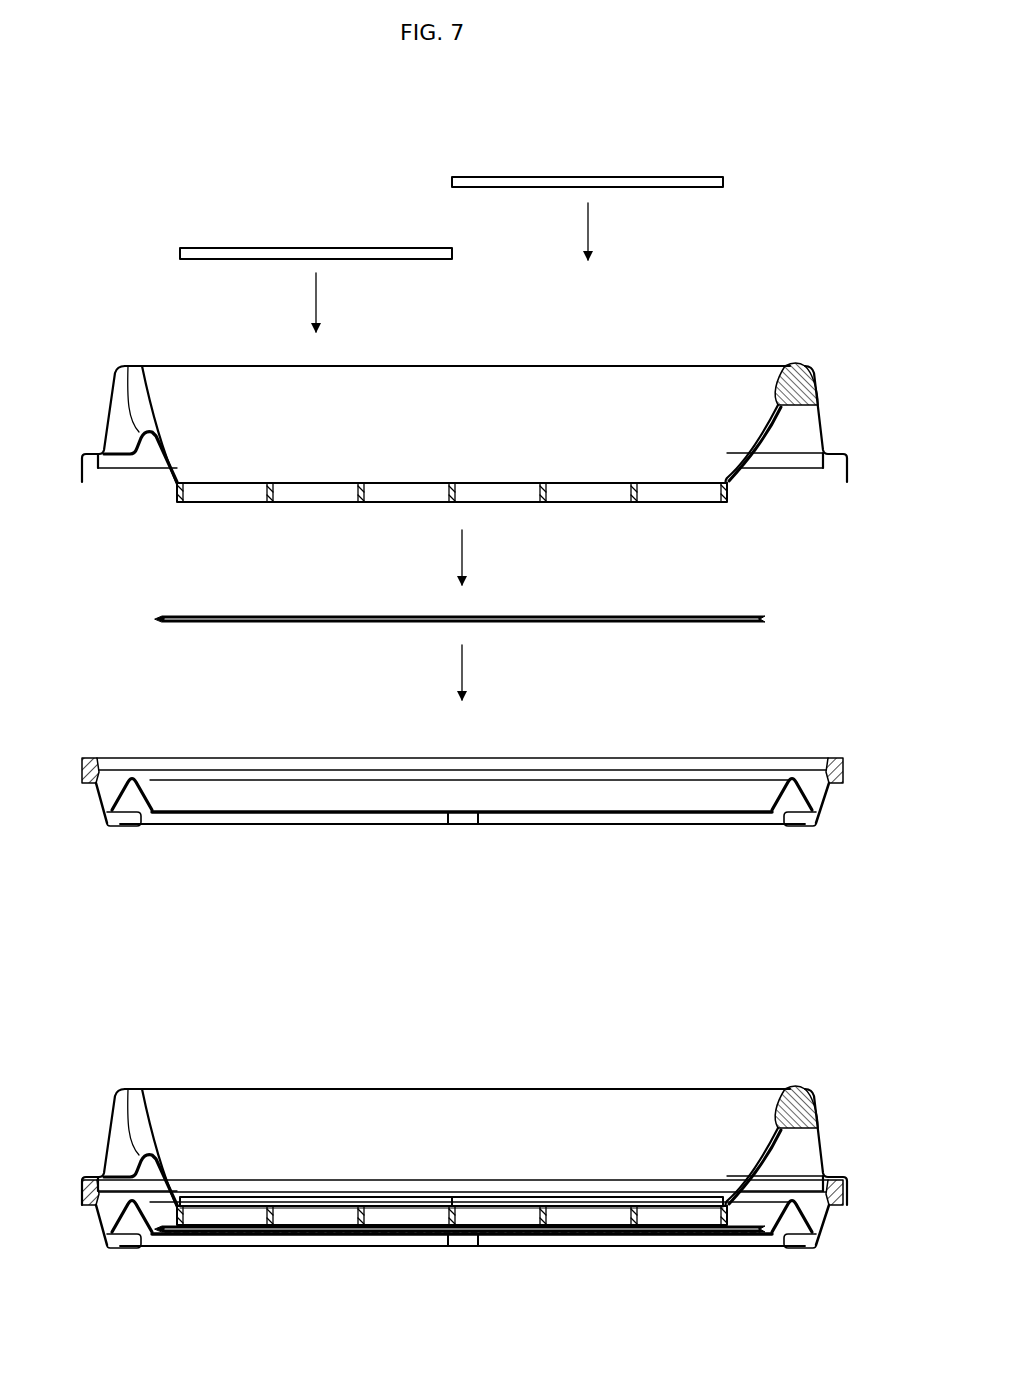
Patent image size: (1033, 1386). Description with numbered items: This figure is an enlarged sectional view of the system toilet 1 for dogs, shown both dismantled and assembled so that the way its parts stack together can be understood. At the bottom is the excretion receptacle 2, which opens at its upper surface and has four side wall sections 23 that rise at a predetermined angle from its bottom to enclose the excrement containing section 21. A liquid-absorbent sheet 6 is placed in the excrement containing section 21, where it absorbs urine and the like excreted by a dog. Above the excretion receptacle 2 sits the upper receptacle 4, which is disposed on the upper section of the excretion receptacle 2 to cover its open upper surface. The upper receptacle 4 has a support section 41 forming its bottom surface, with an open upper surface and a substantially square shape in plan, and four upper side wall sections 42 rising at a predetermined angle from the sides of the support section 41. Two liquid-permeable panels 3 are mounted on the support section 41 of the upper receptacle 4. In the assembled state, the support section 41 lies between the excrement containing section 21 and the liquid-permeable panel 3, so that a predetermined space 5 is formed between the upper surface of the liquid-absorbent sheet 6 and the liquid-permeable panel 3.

The system toilet for dogs 1 is at (706, 106).
The excretion receptacle 2 is at (462, 1006).
The liquid-permeable panel 3 is at (324, 247).
The upper receptacle 4 is at (464, 788).
The predetermined space 5 is at (232, 1218).
The absorbent sheet 6 is at (662, 618).
The excrement containing section 21 is at (462, 818).
The side wall section 23 is at (117, 792).
The support section 41 is at (452, 492).
The upper side wall section 42 is at (803, 364).